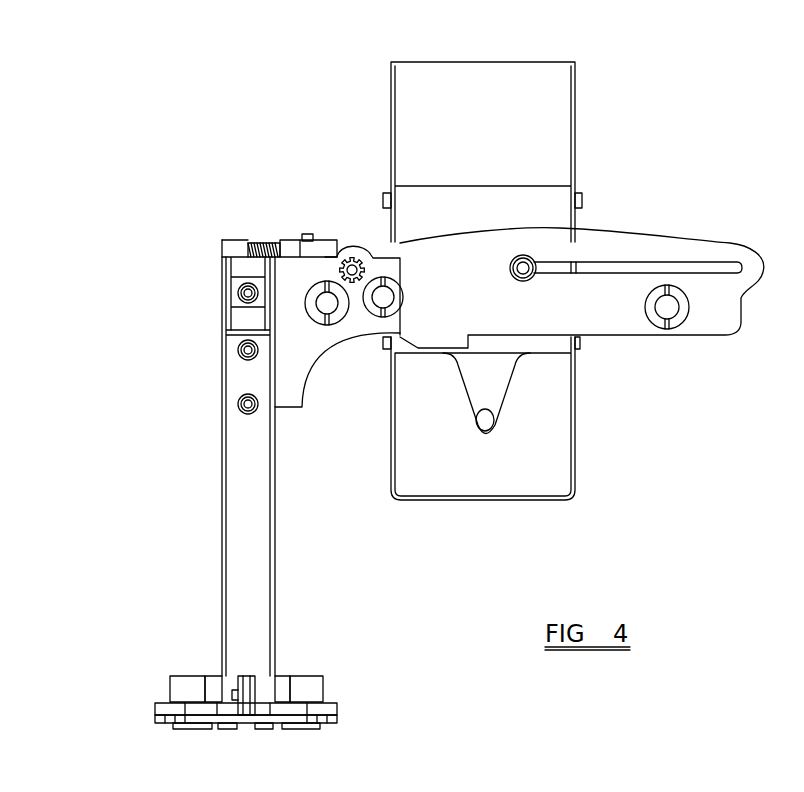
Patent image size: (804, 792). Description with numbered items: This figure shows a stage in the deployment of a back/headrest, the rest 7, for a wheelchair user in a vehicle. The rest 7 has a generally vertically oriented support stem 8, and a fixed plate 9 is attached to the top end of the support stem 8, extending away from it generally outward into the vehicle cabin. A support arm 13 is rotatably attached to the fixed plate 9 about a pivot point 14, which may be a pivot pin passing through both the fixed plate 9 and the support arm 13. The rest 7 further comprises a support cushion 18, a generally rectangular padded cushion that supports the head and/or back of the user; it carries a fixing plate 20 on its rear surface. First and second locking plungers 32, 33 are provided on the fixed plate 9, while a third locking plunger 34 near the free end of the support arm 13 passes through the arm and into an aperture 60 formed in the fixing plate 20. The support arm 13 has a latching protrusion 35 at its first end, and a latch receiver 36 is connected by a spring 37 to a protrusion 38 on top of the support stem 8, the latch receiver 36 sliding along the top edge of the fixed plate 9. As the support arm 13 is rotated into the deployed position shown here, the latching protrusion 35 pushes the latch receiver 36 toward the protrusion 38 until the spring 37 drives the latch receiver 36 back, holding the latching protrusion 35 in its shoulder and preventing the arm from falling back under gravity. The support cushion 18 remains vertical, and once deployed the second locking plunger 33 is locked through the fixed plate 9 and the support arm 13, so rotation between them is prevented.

The rest 7 is at (158, 275).
The support stem 8 is at (245, 548).
The fixed plate 9 is at (287, 362).
The support arm 13 is at (722, 325).
The pivot point 14 is at (352, 262).
The support cushion 18 is at (518, 80).
The fixing plate 20 is at (552, 211).
The first locking plunger 32 is at (320, 322).
The second locking plunger 33 is at (372, 307).
The third locking plunger 34 is at (667, 320).
The latching protrusion 35 is at (337, 243).
The latch receiver 36 is at (325, 241).
The spring 37 is at (270, 242).
The protrusion 38 is at (235, 242).
The aperture 60 is at (488, 420).